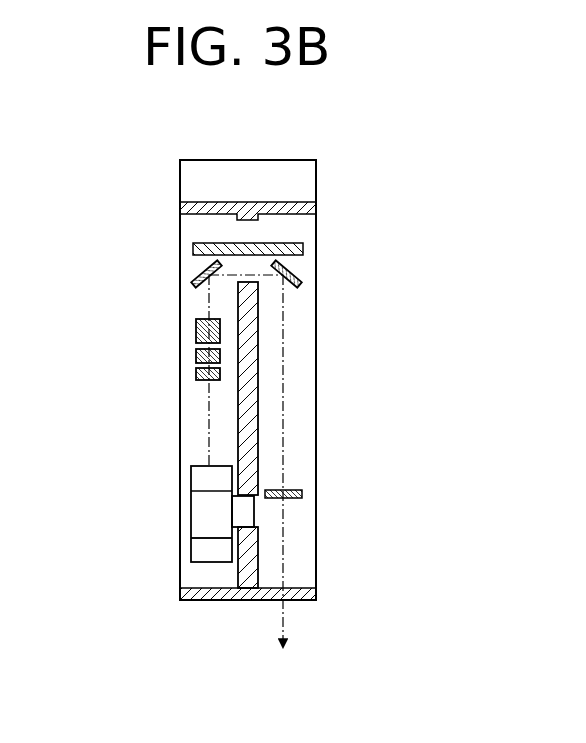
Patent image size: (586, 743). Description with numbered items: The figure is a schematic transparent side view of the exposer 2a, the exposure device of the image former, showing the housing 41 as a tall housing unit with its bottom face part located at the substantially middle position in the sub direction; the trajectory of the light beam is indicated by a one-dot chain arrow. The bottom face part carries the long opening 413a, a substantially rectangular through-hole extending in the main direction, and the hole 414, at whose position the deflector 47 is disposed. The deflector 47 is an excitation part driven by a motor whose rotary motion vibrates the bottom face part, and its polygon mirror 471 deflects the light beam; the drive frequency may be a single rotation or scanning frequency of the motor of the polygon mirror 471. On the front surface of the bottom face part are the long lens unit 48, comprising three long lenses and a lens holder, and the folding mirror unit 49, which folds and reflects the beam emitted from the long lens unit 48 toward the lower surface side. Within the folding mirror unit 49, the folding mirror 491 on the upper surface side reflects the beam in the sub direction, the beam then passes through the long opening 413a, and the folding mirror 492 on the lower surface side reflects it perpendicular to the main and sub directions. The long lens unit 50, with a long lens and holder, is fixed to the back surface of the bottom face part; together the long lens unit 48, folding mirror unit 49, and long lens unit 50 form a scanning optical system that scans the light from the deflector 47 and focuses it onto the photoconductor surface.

The exposer 2a is at (338, 152).
The housing 41 is at (270, 160).
The long opening 413a is at (247, 265).
The hole 414 is at (246, 527).
The deflector 47 is at (190, 506).
The polygon mirror 471 is at (213, 562).
The long lens unit 48 is at (198, 325).
The folding mirror unit 49 is at (226, 258).
The folding mirror 491 is at (198, 273).
The folding mirror 492 is at (297, 277).
The long lens unit 50 is at (302, 492).